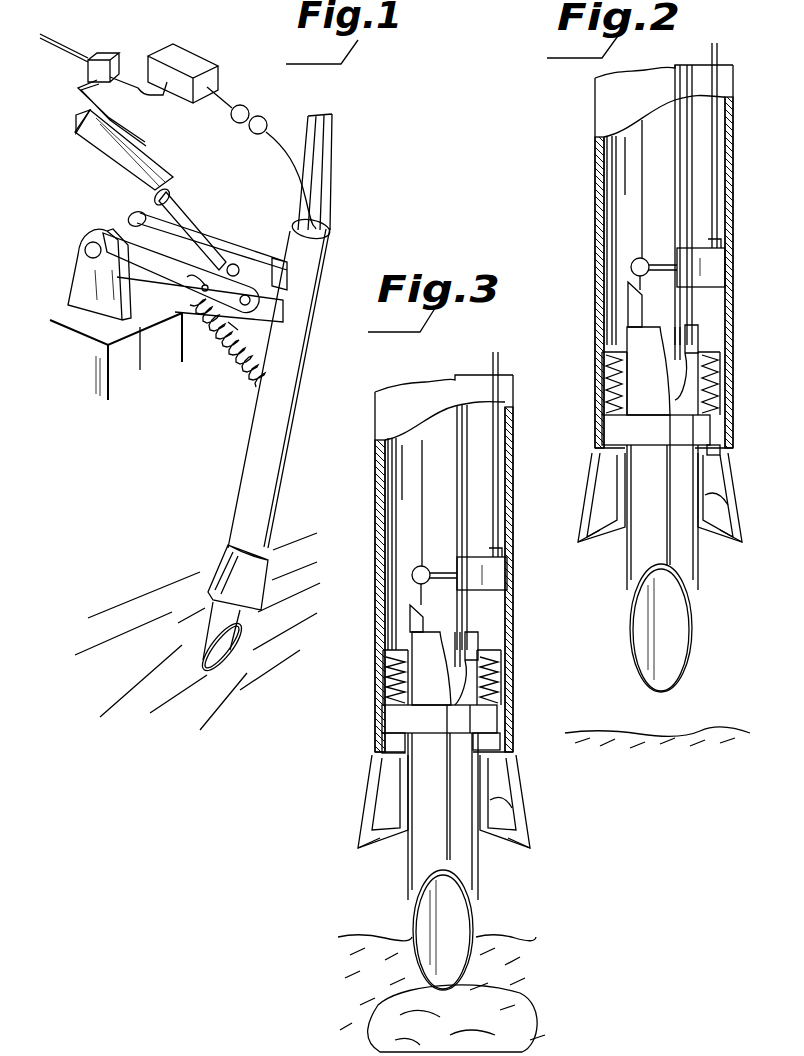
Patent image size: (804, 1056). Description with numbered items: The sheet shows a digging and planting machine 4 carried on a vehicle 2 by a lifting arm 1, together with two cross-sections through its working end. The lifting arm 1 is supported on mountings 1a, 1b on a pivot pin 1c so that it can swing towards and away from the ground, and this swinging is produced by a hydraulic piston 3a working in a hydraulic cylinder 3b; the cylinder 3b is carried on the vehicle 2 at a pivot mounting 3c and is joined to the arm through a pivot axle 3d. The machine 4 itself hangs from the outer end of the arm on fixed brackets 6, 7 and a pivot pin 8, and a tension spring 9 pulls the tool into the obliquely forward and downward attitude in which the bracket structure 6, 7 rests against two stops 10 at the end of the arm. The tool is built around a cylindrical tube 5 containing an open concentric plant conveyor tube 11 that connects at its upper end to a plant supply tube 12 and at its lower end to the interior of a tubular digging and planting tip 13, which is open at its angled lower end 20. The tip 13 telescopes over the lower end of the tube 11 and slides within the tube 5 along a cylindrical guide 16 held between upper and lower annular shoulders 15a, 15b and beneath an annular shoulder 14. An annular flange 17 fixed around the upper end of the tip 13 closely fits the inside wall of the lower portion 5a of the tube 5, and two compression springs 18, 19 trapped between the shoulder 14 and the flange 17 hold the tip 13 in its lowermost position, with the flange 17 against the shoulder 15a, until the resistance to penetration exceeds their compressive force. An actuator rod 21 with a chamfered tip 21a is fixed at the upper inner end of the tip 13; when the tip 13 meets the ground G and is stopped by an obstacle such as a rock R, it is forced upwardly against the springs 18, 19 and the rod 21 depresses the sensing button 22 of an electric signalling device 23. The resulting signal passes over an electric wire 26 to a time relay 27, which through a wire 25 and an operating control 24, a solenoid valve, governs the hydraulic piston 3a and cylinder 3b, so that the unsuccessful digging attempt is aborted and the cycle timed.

In FIG. 1, the lifting arm 1 is at (190, 310).
In FIG. 1, the mounting 1a is at (80, 283).
In FIG. 1, the mounting 1b is at (148, 312).
In FIG. 1, the pivot pin 1c is at (85, 251).
In FIG. 1, the vehicle 2 is at (135, 362).
In FIG. 1, the hydraulic piston 3a is at (180, 209).
In FIG. 1, the hydraulic cylinder 3b is at (118, 164).
In FIG. 1, the pivot mounting 3c is at (82, 118).
In FIG. 1, the pivot axle 3d is at (198, 282).
In FIG. 1, the digging and planting machine 4 is at (320, 351).
In FIG. 1, the cylindrical tube 5 is at (245, 470).
In FIG. 3, the cylindrical tube 5 is at (376, 462).
In FIG. 2, the cylindrical tube 5 is at (596, 153).
In FIG. 3, the lower portion of the tube 5a is at (382, 743).
In FIG. 1, the fixed bracket 6 is at (245, 294).
In FIG. 1, the fixed bracket 7 is at (272, 260).
In FIG. 1, the pivot pin 8 is at (230, 264).
In FIG. 1, the tension spring 9 is at (245, 352).
In FIG. 1, the stops 10 is at (232, 327).
In FIG. 3, the plant conveyor tube 11 is at (430, 487).
In FIG. 2, the plant conveyor tube 11 is at (648, 182).
In FIG. 1, the plant supply tube 12 is at (332, 160).
In FIG. 1, the digging and planting tip 13 is at (220, 618).
In FIG. 3, the digging and planting tip 13 is at (462, 858).
In FIG. 2, the digging and planting tip 13 is at (690, 553).
In FIG. 3, the annular shoulder 14 is at (488, 646).
In FIG. 2, the annular shoulder 14 is at (705, 343).
In FIG. 3, the upper annular shoulder 15a is at (500, 760).
In FIG. 2, the upper annular shoulder 15a is at (598, 478).
In FIG. 3, the lower annular shoulder 15b is at (532, 842).
In FIG. 2, the lower annular shoulder 15b is at (606, 545).
In FIG. 3, the cylindrical guide 16 is at (511, 802).
In FIG. 2, the cylindrical guide 16 is at (730, 497).
In FIG. 3, the annular flange 17 is at (497, 738).
In FIG. 2, the annular flange 17 is at (710, 432).
In FIG. 3, the compression spring 18 is at (388, 678).
In FIG. 2, the compression spring 18 is at (605, 374).
In FIG. 3, the compression spring 19 is at (501, 680).
In FIG. 2, the compression spring 19 is at (720, 372).
In FIG. 1, the lower end opening 20 is at (228, 657).
In FIG. 3, the lower end opening 20 is at (456, 925).
In FIG. 2, the lower end opening 20 is at (675, 613).
In FIG. 3, the actuator rod 21 is at (410, 610).
In FIG. 2, the actuator rod 21 is at (630, 307).
In FIG. 3, the chamfered tip 21a is at (421, 523).
In FIG. 3, the sensing button 22 is at (413, 570).
In FIG. 2, the sensing button 22 is at (632, 262).
In FIG. 3, the electric signalling device 23 is at (506, 574).
In FIG. 2, the electric signalling device 23 is at (725, 267).
In FIG. 1, the operating control 24 is at (98, 58).
In FIG. 1, the wire 25 is at (137, 80).
In FIG. 1, the electric wire 26 is at (263, 114).
In FIG. 3, the electric wire 26 is at (498, 468).
In FIG. 2, the electric wire 26 is at (718, 162).
In FIG. 1, the time relay 27 is at (191, 55).
In FIG. 3, the ground G is at (512, 937).
In FIG. 2, the ground G is at (722, 733).
In FIG. 3, the rock R is at (530, 1035).